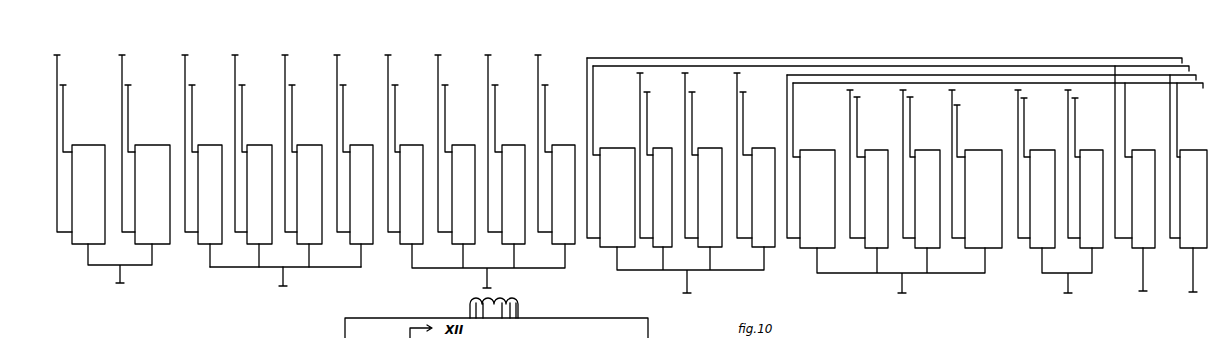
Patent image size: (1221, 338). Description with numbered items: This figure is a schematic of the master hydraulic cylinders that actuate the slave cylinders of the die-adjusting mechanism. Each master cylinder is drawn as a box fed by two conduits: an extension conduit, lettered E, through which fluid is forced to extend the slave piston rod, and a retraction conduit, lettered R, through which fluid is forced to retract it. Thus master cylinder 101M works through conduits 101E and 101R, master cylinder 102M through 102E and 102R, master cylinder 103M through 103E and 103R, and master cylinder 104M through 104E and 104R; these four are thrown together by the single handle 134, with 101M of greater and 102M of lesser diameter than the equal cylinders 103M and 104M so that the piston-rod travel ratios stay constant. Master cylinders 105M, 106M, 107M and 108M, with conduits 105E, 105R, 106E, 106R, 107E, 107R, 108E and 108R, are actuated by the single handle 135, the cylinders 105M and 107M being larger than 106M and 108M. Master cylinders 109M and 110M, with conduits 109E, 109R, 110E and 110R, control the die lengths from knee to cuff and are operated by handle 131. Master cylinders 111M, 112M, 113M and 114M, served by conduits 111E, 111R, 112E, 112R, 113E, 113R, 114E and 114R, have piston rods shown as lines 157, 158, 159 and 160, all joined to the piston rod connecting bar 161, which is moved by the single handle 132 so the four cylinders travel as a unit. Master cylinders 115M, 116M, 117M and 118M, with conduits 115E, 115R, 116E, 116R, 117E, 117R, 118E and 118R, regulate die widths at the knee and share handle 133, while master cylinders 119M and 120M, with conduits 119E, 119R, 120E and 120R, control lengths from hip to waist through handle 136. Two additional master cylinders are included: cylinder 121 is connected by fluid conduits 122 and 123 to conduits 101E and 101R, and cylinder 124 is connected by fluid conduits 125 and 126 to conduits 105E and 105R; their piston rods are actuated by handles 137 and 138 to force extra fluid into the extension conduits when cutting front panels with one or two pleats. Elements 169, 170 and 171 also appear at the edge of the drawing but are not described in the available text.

The retraction conduit 101R is at (588, 103).
The extension conduit 101E is at (594, 122).
The master cylinder 101M is at (617, 158).
The retraction conduit 102R is at (641, 103).
The extension conduit 102E is at (648, 122).
The master cylinder 102M is at (663, 158).
The retraction conduit 103R is at (686, 103).
The extension conduit 103E is at (693, 122).
The master cylinder 103M is at (710, 158).
The retraction conduit 104R is at (738, 103).
The extension conduit 104E is at (744, 122).
The master cylinder 104M is at (764, 158).
The retraction conduit 105R is at (788, 103).
The extension conduit 105E is at (794, 122).
The master cylinder 105M is at (817, 160).
The retraction conduit 106R is at (851, 103).
The extension conduit 106E is at (858, 122).
The master cylinder 106M is at (877, 160).
The retraction conduit 107R is at (953, 103).
The extension conduit 107E is at (958, 122).
The master cylinder 107M is at (985, 160).
The retraction conduit 108R is at (904, 103).
The extension conduit 108E is at (911, 122).
The master cylinder 108M is at (927, 160).
The retraction conduit 109R is at (58, 73).
The extension conduit 109E is at (64, 107).
The master cylinder 109M is at (88, 150).
The retraction conduit 110R is at (123, 73).
The extension conduit 110E is at (129, 107).
The master cylinder 110M is at (152, 150).
The retraction conduit 111R is at (186, 73).
The extension conduit 111E is at (193, 107).
The master cylinder 111M is at (210, 150).
The retraction conduit 112R is at (236, 73).
The extension conduit 112E is at (243, 107).
The master cylinder 112M is at (259, 150).
The retraction conduit 113R is at (286, 73).
The extension conduit 113E is at (293, 107).
The master cylinder 113M is at (309, 150).
The retraction conduit 114R is at (338, 73).
The extension conduit 114E is at (344, 107).
The master cylinder 114M is at (361, 150).
The retraction conduit 115R is at (389, 73).
The extension conduit 115E is at (396, 107).
The master cylinder 115M is at (412, 150).
The retraction conduit 116R is at (439, 73).
The extension conduit 116E is at (446, 107).
The master cylinder 116M is at (463, 150).
The retraction conduit 117R is at (489, 73).
The extension conduit 117E is at (496, 107).
The master cylinder 117M is at (514, 150).
The retraction conduit 118R is at (539, 73).
The extension conduit 118E is at (546, 107).
The master cylinder 118M is at (564, 150).
The retraction conduit 119R is at (1019, 103).
The extension conduit 119E is at (1025, 122).
The master cylinder 119M is at (1042, 160).
The retraction conduit 120R is at (1069, 103).
The extension conduit 120E is at (1076, 122).
The master cylinder 120M is at (1092, 160).
The additional master cylinder 121 is at (1143, 160).
The fluid conduit 122 is at (1126, 122).
The fluid conduit 123 is at (1117, 103).
The additional master cylinder 124 is at (1193, 160).
The fluid conduit 125 is at (1178, 122).
The fluid conduit 126 is at (1172, 103).
The handle 131 is at (113, 282).
The handle 132 is at (276, 283).
The handle 133 is at (480, 290).
The handle 134 is at (683, 291).
The handle 135 is at (896, 294).
The handle 136 is at (1063, 297).
The handle 137 is at (1139, 292).
The handle 138 is at (1191, 294).
The piston rod 157 is at (208, 259).
The piston rod 158 is at (257, 258).
The piston rod 159 is at (307, 258).
The piston rod 160 is at (359, 262).
The piston rod connecting bar 161 is at (298, 268).
The control unit housing 169 is at (650, 336).
The coil element 170 is at (375, 337).
The connection arrow 171 is at (345, 336).